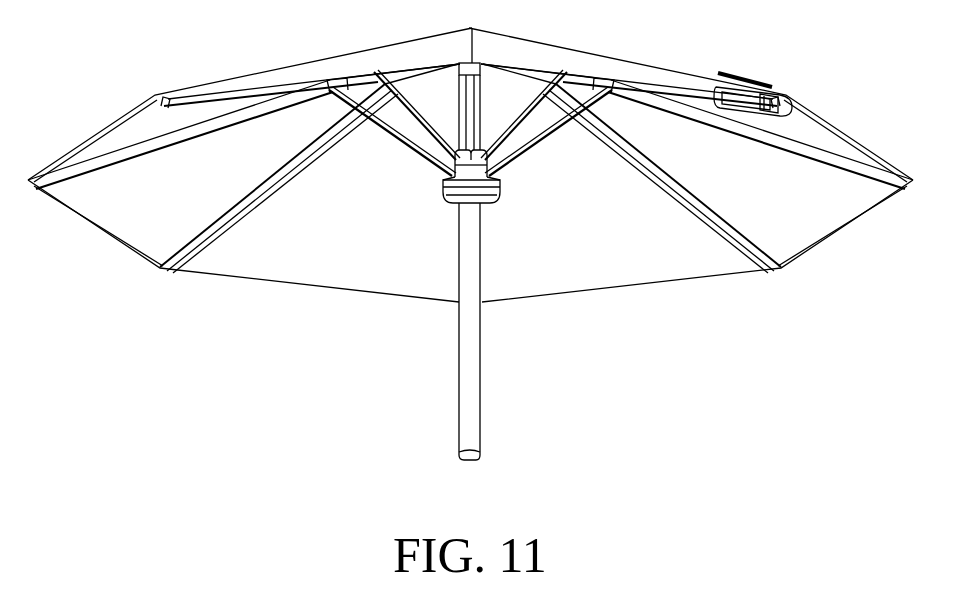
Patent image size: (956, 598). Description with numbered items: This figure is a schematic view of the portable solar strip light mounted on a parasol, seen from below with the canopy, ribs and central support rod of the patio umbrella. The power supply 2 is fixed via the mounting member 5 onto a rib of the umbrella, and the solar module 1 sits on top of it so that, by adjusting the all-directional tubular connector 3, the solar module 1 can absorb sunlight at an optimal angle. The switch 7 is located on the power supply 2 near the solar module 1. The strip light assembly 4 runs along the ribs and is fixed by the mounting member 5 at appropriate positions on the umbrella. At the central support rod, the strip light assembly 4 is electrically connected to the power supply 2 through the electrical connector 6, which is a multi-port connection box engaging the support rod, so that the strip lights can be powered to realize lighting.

The solar module 1 is at (752, 83).
The power supply 2 is at (728, 113).
The connector 3 is at (793, 101).
The strip light assembly 4 is at (407, 118).
The mounting member 5 is at (440, 150).
The electrical connector 6 is at (490, 203).
The switch 7 is at (760, 113).